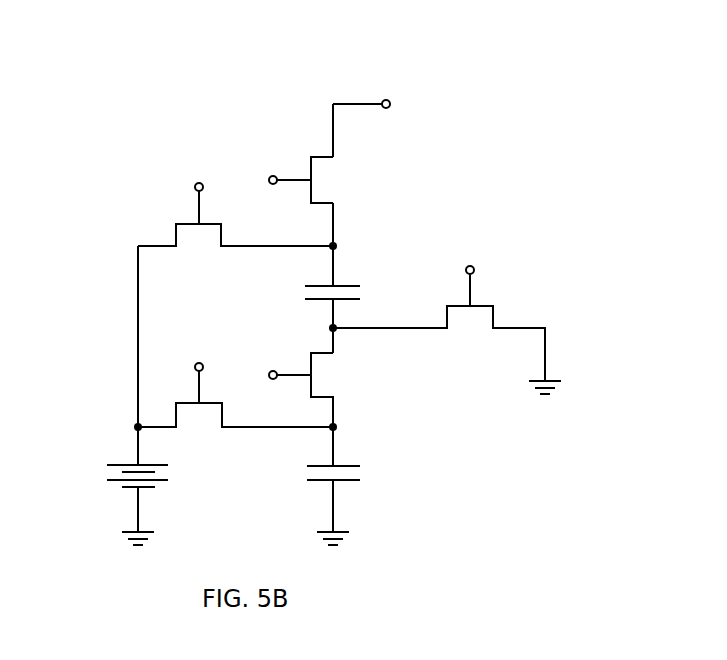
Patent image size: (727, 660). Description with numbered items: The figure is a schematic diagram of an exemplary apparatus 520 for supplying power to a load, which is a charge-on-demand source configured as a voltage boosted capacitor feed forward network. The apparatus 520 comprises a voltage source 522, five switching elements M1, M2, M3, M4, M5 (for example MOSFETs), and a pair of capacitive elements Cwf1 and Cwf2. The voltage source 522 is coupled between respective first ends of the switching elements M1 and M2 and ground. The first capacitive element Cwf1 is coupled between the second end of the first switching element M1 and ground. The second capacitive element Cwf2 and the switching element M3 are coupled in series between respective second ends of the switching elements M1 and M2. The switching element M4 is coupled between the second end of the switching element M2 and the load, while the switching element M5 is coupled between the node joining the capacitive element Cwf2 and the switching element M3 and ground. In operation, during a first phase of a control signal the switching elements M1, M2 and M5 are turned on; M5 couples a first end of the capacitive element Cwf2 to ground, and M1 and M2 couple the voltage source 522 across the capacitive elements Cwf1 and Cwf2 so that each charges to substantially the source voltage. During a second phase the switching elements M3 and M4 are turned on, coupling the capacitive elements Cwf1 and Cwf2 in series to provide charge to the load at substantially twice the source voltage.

The apparatus 520 is at (360, 279).
The voltage source 522 is at (123, 462).
The first switching element M1 is at (235, 391).
The second switching element M2 is at (235, 210).
The switching element M3 is at (300, 390).
The switching element M4 is at (302, 180).
The switching element M5 is at (447, 316).
The first capacitive element Cwf1 is at (356, 486).
The second capacitive element Cwf2 is at (355, 299).